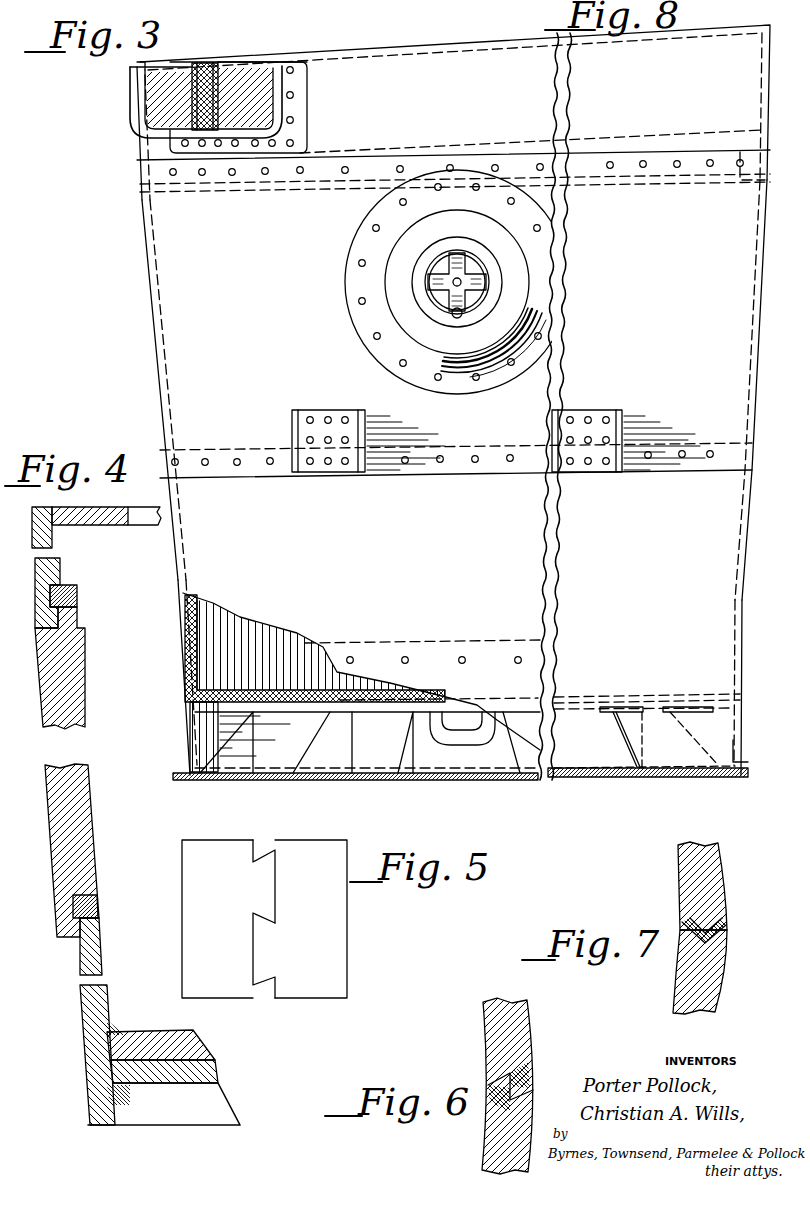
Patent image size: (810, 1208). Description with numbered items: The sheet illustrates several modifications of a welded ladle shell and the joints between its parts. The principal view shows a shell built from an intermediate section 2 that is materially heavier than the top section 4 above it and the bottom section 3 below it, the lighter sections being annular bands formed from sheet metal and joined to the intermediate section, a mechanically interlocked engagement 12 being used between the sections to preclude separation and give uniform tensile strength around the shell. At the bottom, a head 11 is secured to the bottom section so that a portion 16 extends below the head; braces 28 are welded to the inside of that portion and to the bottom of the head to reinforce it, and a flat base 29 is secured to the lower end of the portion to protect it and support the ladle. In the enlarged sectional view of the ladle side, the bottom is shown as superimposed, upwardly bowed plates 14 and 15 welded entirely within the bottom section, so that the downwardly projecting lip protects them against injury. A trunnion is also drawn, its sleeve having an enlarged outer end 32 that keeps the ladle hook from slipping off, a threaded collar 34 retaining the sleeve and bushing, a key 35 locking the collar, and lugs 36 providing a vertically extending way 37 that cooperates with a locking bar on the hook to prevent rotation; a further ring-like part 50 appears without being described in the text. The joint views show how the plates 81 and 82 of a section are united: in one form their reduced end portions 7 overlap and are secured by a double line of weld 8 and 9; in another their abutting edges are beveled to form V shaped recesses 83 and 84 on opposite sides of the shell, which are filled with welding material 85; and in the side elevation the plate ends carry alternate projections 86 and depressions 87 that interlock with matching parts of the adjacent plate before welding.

In FIG. 3, the top section 4 is at (770, 112).
In FIG. 4, the top section 4 is at (80, 648).
In FIG. 3, the intermediate section 2 is at (765, 320).
In FIG. 4, the intermediate section 2 is at (95, 855).
In FIG. 3, the bottom section 3 is at (750, 540).
In FIG. 4, the bottom section 3 is at (105, 942).
In FIG. 3, the lugs 36 is at (438, 265).
In FIG. 3, the flange ring 50 is at (348, 262).
In FIG. 3, the enlarged outer end 32 is at (392, 296).
In FIG. 3, the threaded collar 34 is at (495, 275).
In FIG. 3, the vertically extending way 37 is at (462, 250).
In FIG. 3, the key 35 is at (462, 314).
In FIG. 3, the head 11 is at (188, 670).
In FIG. 3, the downwardly projecting edge or lip 16 is at (190, 750).
In FIG. 4, the downwardly projecting edge or lip 16 is at (100, 1125).
In FIG. 3, the braces 28 is at (305, 766).
In FIG. 3, the flat base 29 is at (206, 781).
In FIG. 3, the bottom plate 14 is at (645, 700).
In FIG. 4, the bottom plate 14 is at (205, 1048).
In FIG. 3, the bottom plate 15 is at (598, 705).
In FIG. 4, the bottom plate 15 is at (218, 1077).
In FIG. 4, the mechanically interlocked engagement 12 is at (100, 908).
In FIG. 5, the plate 81 is at (217, 919).
In FIG. 7, the plate 81 is at (720, 850).
In FIG. 5, the plate 82 is at (311, 919).
In FIG. 7, the plate 82 is at (722, 968).
In FIG. 5, the projections 86 is at (255, 955).
In FIG. 5, the depressions 87 is at (277, 872).
In FIG. 7, the V shaped recess 83 is at (712, 912).
In FIG. 7, the V shaped recess 84 is at (700, 940).
In FIG. 7, the welding material 85 is at (727, 927).
In FIG. 6, the reduced end portions 7 is at (548, 1100).
In FIG. 6, the line of weld 8 is at (490, 1108).
In FIG. 6, the line of weld 9 is at (528, 1075).